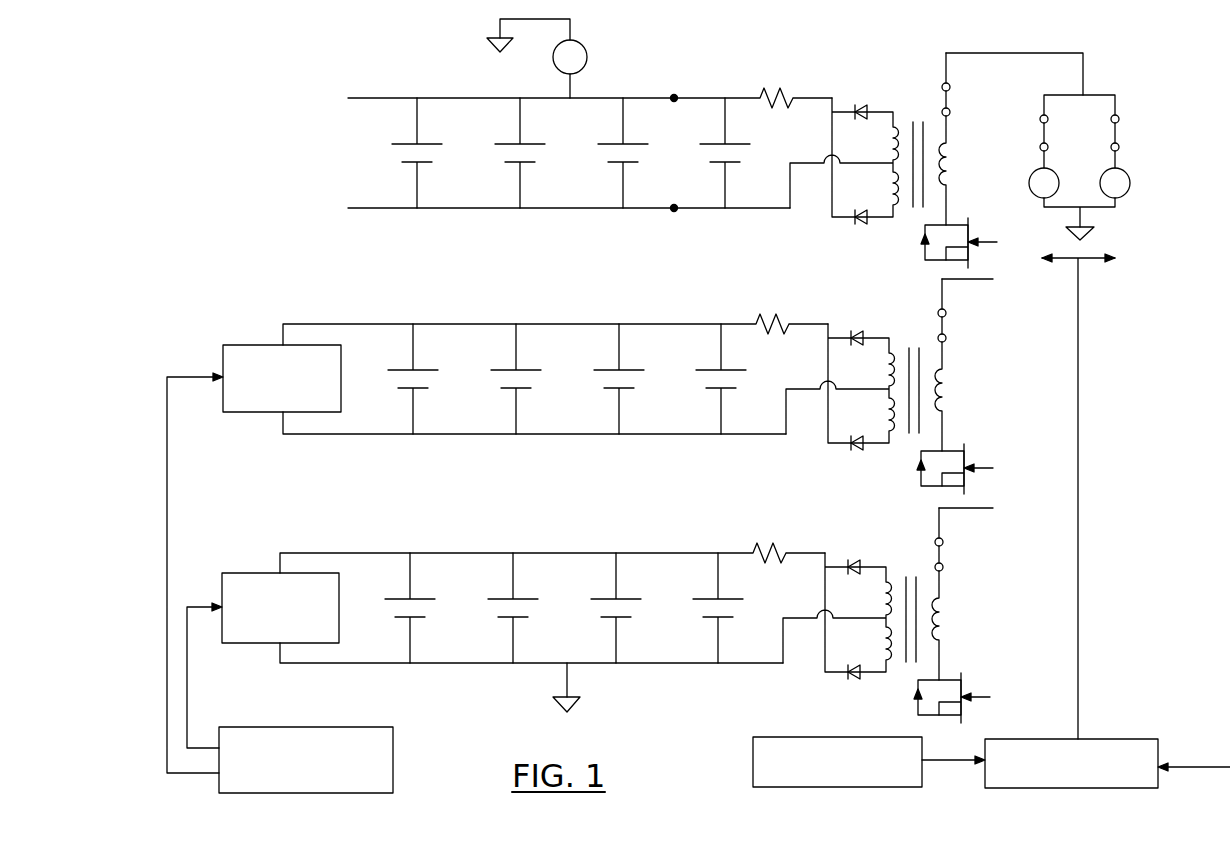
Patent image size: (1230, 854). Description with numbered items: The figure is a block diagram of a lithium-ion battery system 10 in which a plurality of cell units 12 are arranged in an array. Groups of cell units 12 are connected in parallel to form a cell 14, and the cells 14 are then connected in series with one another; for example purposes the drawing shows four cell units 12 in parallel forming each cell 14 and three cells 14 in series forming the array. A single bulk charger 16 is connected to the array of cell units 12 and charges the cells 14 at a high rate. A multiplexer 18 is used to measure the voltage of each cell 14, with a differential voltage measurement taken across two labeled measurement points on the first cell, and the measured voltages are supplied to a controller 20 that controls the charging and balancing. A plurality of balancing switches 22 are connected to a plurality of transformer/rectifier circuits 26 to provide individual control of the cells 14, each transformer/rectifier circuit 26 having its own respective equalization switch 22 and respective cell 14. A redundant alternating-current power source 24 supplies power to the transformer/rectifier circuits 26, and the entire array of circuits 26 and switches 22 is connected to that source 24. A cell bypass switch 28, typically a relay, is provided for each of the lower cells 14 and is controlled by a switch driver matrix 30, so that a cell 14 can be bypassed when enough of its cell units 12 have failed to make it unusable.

The lithium-ion battery system 10 is at (308, 58).
The cell unit 12 is at (500, 143).
The cell 14 is at (380, 97).
The bulk charger 16 is at (587, 50).
The multiplexer 18 is at (851, 737).
The controller 20 is at (1122, 739).
The balancing switch 22 is at (953, 224).
The redundant AC power source 24 is at (1104, 93).
The transformer/rectifier circuit 26 is at (887, 73).
The cell bypass switch 28 is at (247, 343).
The switch driver matrix 30 is at (387, 725).